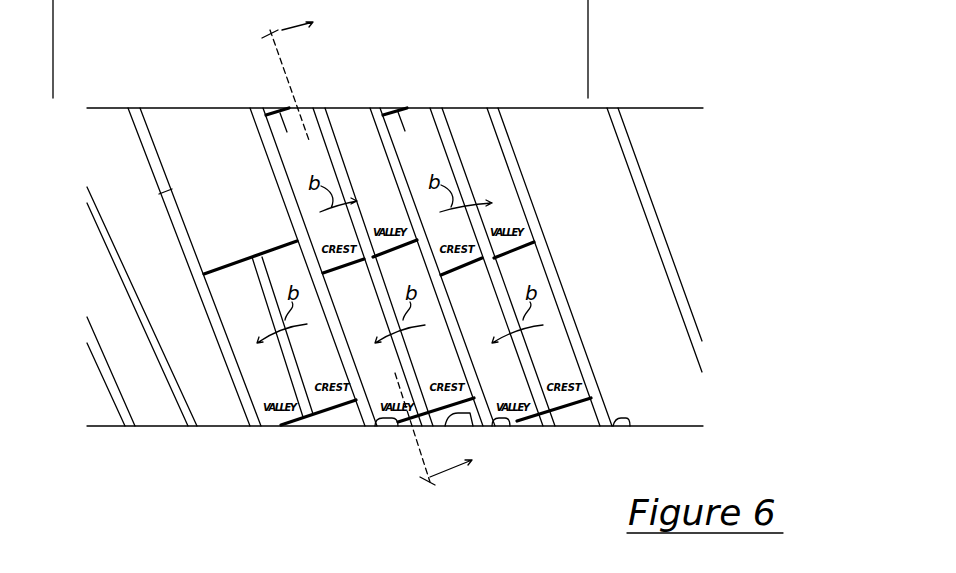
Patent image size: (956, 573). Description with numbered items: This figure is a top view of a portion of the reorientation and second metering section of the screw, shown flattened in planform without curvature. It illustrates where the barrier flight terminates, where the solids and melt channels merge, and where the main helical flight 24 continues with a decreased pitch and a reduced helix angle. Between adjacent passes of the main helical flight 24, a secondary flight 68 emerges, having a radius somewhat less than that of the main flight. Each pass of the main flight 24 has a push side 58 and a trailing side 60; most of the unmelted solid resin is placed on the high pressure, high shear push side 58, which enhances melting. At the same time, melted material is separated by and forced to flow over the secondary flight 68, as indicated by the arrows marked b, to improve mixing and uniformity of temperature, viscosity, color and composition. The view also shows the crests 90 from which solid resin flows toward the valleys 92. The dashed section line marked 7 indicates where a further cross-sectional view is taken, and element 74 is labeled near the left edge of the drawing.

The panel edge flange 74 is at (141, 139).
The push side 58 is at (151, 130).
The crests 90 is at (283, 108).
The section line 7- 7 is at (355, 259).
The secondary flight 68 is at (318, 117).
The valleys 92 is at (345, 122).
The main helical flight 24 is at (380, 110).
The trailing side 60 is at (357, 421).